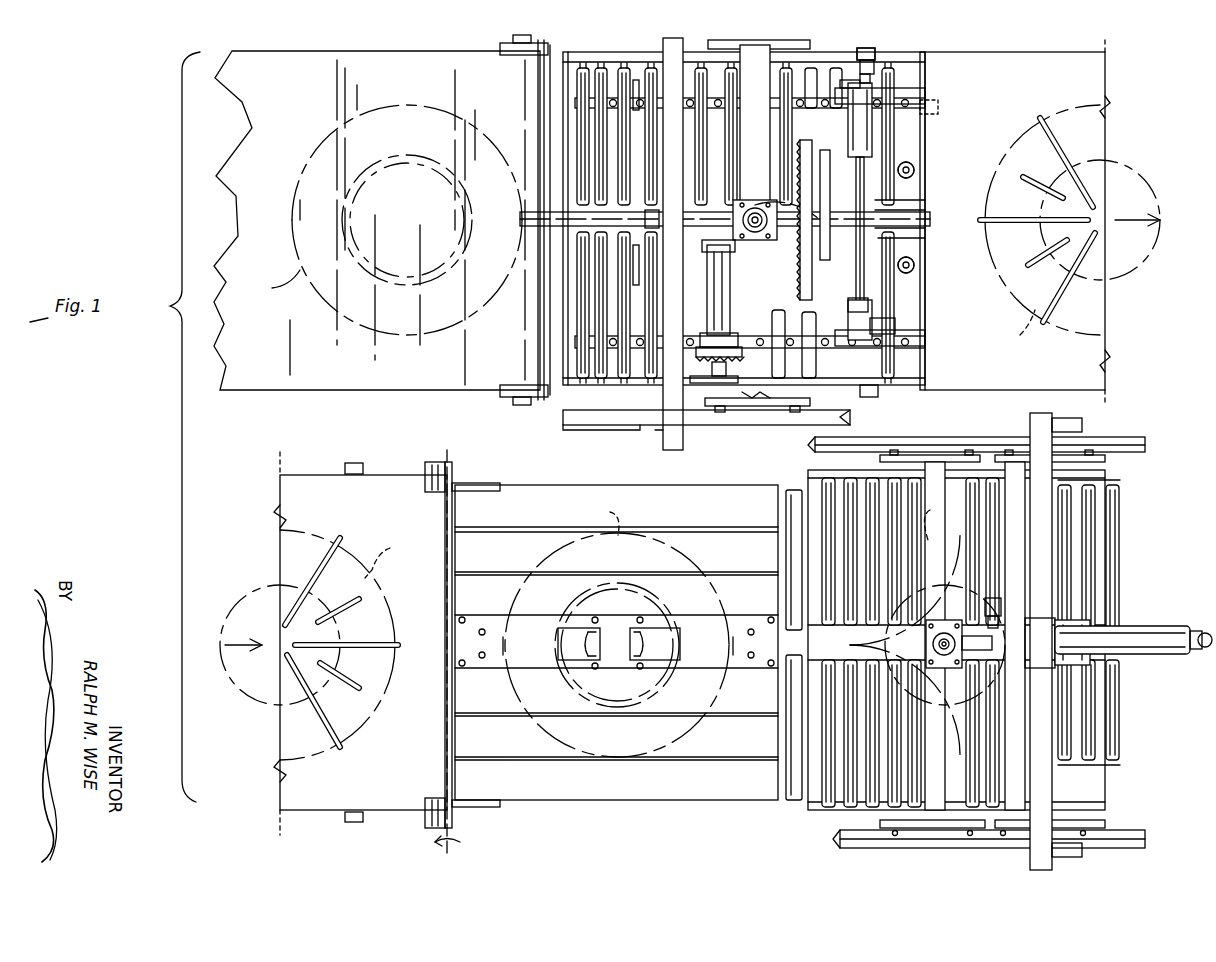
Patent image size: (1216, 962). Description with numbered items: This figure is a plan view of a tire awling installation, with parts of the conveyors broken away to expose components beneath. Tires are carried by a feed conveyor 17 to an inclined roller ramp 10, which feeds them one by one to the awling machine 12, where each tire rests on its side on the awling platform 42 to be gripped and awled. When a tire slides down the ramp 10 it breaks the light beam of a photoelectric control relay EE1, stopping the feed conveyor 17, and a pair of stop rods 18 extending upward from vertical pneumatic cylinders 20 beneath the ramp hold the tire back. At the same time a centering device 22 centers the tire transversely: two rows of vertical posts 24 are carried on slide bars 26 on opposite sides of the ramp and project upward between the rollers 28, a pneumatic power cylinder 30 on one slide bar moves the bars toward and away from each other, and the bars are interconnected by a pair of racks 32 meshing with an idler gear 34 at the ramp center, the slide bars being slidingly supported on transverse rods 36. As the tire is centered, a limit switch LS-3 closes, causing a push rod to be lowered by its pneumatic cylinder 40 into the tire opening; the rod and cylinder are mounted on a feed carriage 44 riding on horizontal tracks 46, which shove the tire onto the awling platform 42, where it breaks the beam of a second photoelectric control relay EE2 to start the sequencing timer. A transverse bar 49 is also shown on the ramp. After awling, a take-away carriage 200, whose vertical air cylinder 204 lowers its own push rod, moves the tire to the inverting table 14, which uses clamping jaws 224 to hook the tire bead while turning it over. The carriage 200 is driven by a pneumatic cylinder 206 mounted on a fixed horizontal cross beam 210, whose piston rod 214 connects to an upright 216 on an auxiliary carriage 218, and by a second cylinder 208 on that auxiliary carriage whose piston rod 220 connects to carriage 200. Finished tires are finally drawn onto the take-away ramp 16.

The roller ramp 10 is at (554, 404).
The awling machine 12 is at (1120, 78).
The inverting table 14 is at (628, 812).
The take-away ramp 16 is at (810, 823).
The feed conveyor 17 is at (352, 392).
The stop rods 18 is at (920, 170).
The pneumatic cylinders 20 is at (917, 150).
The centering device 22 is at (880, 207).
The vertical posts 24 is at (900, 325).
The slide bars 26 is at (925, 85).
The rollers 28 is at (640, 92).
The pneumatic power cylinder 30 is at (760, 320).
The racks 32 is at (832, 190).
The idler gear 34 is at (760, 205).
The rods 36 is at (885, 122).
The pneumatic cylinder 40 is at (716, 298).
The awling platform 42 is at (1075, 345).
The feed carriage 44 is at (735, 412).
The horizontal tracks 46 is at (590, 425).
The transverse bar 49 is at (556, 228).
The photoelectric control relay EE1 is at (878, 56).
The photoelectric control relay EE2 is at (363, 466).
The limit switch LS-3 is at (942, 105).
The take-away carriage 200 is at (930, 475).
The air cylinder 204 is at (948, 628).
The pneumatic cylinder 206 is at (1135, 625).
The pneumatic cylinder 208 is at (1192, 628).
The horizontal cross beam 210 is at (1040, 530).
The piston rod 214 is at (1050, 670).
The upright 216 is at (1060, 615).
The auxiliary carriage 218 is at (1080, 463).
The piston rod 220 is at (992, 600).
The clamping jaws 224 is at (655, 690).